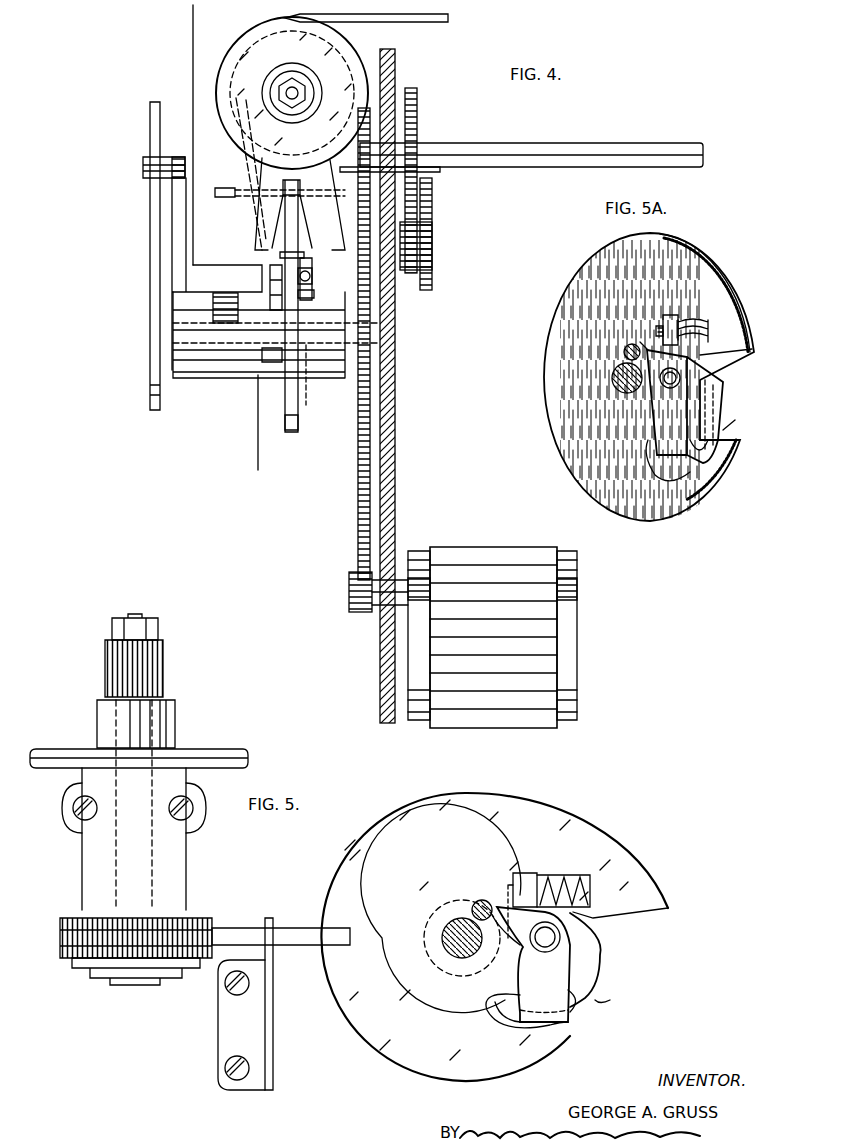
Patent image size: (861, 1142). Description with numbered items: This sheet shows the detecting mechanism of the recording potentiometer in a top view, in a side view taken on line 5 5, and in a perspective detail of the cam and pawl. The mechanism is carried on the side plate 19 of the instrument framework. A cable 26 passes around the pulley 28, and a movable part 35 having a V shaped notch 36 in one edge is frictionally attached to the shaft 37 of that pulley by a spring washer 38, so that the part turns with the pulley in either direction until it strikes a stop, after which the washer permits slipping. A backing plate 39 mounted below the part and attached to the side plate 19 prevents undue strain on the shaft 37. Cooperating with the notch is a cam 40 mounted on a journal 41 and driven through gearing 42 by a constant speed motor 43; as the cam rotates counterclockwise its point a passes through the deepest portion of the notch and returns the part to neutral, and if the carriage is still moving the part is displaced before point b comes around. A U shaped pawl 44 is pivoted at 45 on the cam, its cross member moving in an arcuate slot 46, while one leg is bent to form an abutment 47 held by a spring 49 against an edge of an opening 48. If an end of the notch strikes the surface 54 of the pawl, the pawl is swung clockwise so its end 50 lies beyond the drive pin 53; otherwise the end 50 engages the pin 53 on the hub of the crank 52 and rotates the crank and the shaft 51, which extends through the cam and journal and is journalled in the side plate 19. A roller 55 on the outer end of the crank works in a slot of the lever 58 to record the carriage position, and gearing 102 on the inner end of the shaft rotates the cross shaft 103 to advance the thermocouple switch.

In FIG. 4, the section line 5— 5 is at (183, 22).
In FIG. 4, the side plate 19 is at (396, 458).
In FIG. 4, the cable 26 is at (432, 22).
In FIG. 5, the cable 26 is at (243, 756).
In FIG. 4, the pulley 28 is at (248, 46).
In FIG. 5, the pulley 28 is at (56, 750).
In FIG. 4, the movable part 35 is at (245, 165).
In FIG. 5, the movable part 35 is at (228, 926).
In FIG. 4, the V shaped notch 36 is at (282, 225).
In FIG. 4, the shaft 37 is at (300, 87).
In FIG. 5, the shaft 37 is at (130, 615).
In FIG. 5, the spring washer 38 is at (85, 965).
In FIG. 4, the backing plate 39 is at (232, 190).
In FIG. 5, the backing plate 39 is at (272, 1020).
In FIG. 4, the cam 40 is at (288, 418).
In FIG. 5A, the cam 40 is at (552, 335).
In FIG. 5, the cam 40 is at (465, 797).
In FIG. 4, the journal 41 is at (338, 360).
In FIG. 5, the journal 41 is at (420, 960).
In FIG. 4, the gearing 42 is at (358, 485).
In FIG. 4, the constant speed motor 43 is at (500, 547).
In FIG. 4, the U shaped pawl 44 is at (308, 258).
In FIG. 5A, the U shaped pawl 44 is at (660, 418).
In FIG. 5, the U shaped pawl 44 is at (556, 975).
In FIG. 4, the pivot 45 is at (312, 276).
In FIG. 5A, the pivot 45 is at (663, 385).
In FIG. 5, the pivot 45 is at (563, 937).
In FIG. 5A, the arcuate slot 46 is at (640, 442).
In FIG. 5, the arcuate slot 46 is at (530, 1015).
In FIG. 4, the abutment 47 is at (312, 294).
In FIG. 5A, the abutment 47 is at (663, 330).
In FIG. 5, the abutment 47 is at (540, 900).
In FIG. 5A, the opening 48 is at (678, 312).
In FIG. 5, the opening 48 is at (515, 876).
In FIG. 4, the spring 49 is at (280, 256).
In FIG. 5A, the spring 49 is at (690, 320).
In FIG. 5, the spring 49 is at (575, 876).
In FIG. 4, the end of pawl 50 is at (272, 308).
In FIG. 5A, the end of pawl 50 is at (640, 340).
In FIG. 5, the end of pawl 50 is at (495, 948).
In FIG. 4, the shaft 51 is at (300, 404).
In FIG. 5A, the shaft 51 is at (612, 374).
In FIG. 5, the shaft 51 is at (452, 936).
In FIG. 4, the crank 52 is at (178, 262).
In FIG. 4, the drive pin 53 is at (278, 365).
In FIG. 5A, the drive pin 53 is at (626, 350).
In FIG. 5, the drive pin 53 is at (480, 902).
In FIG. 5A, the surface of pawl 54 is at (700, 438).
In FIG. 5, the surface of pawl 54 is at (572, 1000).
In FIG. 4, the roller 55 is at (144, 158).
In FIG. 4, the lever 58 is at (150, 108).
In FIG. 4, the gearing 102 is at (420, 255).
In FIG. 4, the shaft 103 is at (545, 155).
In FIG. 5A, the point a of the cam a is at (736, 346).
In FIG. 5, the point a of the cam a is at (677, 914).
In FIG. 5A, the point b of the cam b is at (734, 419).
In FIG. 5, the point b of the cam b is at (608, 996).